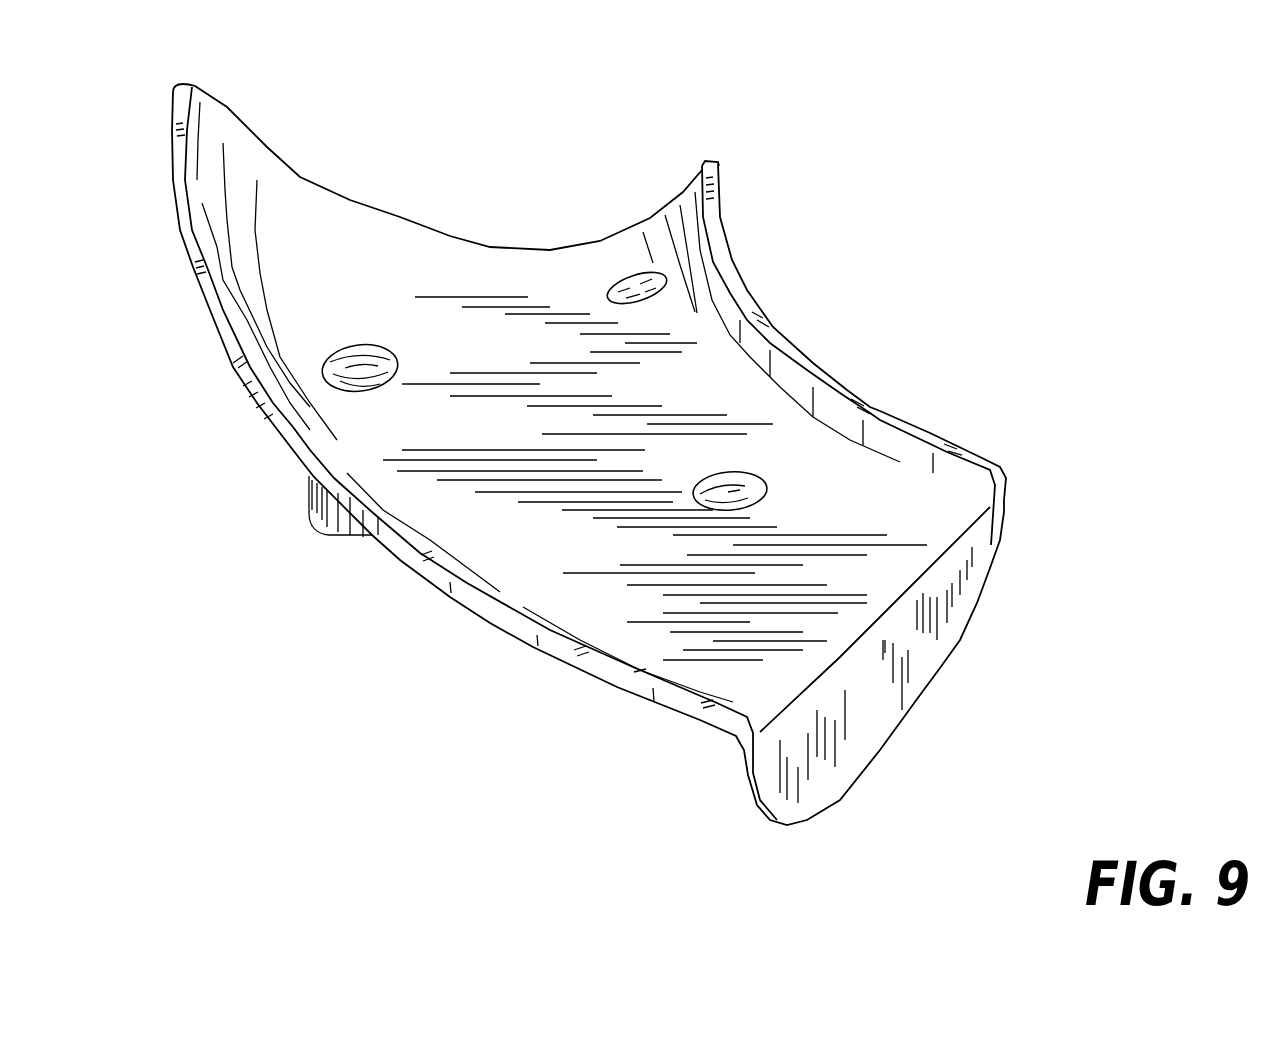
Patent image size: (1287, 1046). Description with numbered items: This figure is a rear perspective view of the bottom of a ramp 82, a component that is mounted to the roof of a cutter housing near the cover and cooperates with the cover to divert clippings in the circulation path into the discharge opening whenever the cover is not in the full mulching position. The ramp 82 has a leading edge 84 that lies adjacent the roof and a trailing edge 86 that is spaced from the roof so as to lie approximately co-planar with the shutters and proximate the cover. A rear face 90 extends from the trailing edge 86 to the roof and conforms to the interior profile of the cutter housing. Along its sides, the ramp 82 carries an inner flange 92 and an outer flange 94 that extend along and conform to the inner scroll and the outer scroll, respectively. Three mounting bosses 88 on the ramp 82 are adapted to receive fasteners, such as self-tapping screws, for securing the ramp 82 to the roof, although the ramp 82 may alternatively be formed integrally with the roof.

The ramp 82 is at (501, 434).
The leading edge 84 is at (463, 238).
The trailing edge 86 is at (870, 625).
The mounting bosses 88 is at (613, 277).
The rear face 90 is at (962, 590).
The inner flange 92 is at (903, 424).
The outer flange 94 is at (200, 283).